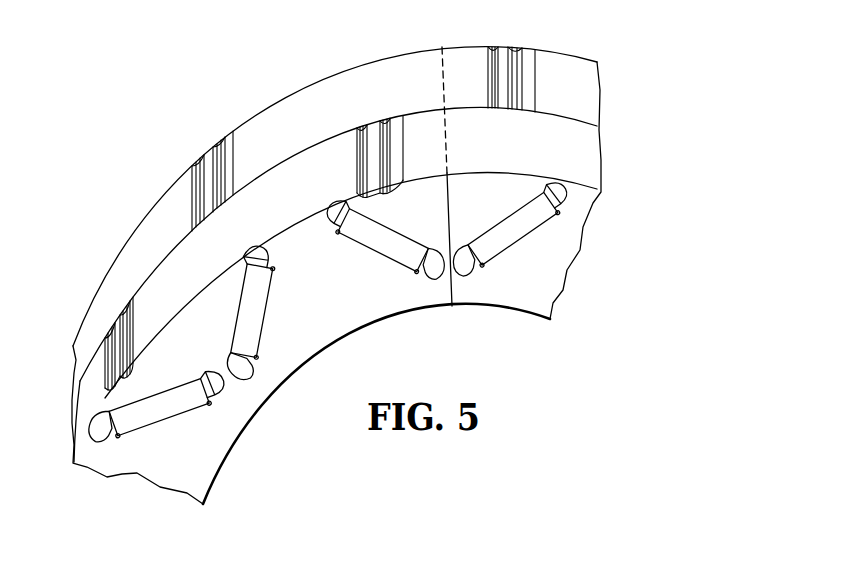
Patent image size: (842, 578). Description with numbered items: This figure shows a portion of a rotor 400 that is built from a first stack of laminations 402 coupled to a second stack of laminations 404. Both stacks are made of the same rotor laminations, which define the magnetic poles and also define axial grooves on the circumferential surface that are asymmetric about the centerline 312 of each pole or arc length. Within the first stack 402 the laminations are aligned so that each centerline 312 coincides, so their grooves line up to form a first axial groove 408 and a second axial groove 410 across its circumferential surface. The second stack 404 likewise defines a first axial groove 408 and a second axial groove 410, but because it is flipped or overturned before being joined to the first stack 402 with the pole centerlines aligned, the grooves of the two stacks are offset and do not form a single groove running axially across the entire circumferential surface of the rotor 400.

The rotor 400 is at (237, 84).
The first stack of laminations 402 is at (593, 160).
The second stack of laminations 404 is at (590, 95).
The first axial groove 408 is at (230, 152).
The second axial groove 410 is at (200, 167).
The centerline 312 is at (437, 70).